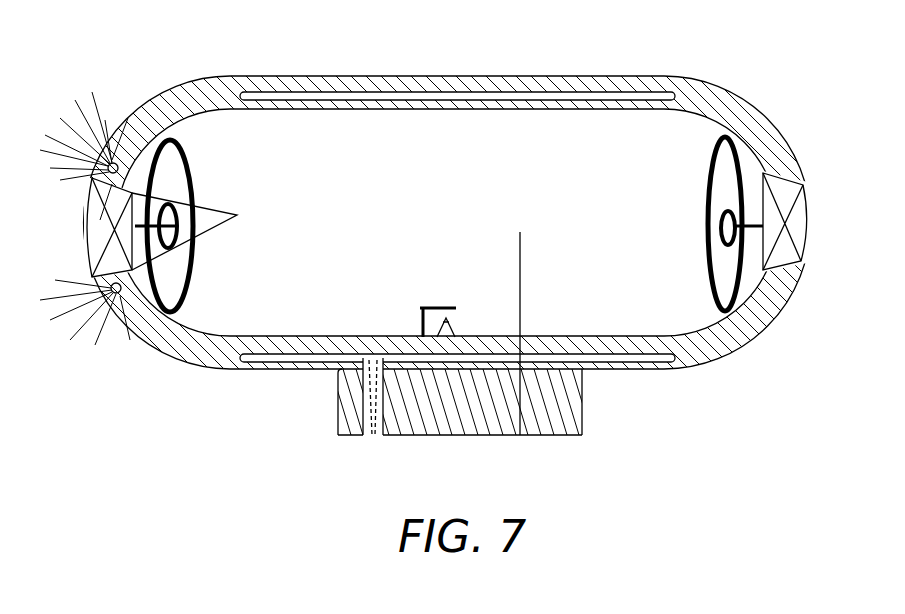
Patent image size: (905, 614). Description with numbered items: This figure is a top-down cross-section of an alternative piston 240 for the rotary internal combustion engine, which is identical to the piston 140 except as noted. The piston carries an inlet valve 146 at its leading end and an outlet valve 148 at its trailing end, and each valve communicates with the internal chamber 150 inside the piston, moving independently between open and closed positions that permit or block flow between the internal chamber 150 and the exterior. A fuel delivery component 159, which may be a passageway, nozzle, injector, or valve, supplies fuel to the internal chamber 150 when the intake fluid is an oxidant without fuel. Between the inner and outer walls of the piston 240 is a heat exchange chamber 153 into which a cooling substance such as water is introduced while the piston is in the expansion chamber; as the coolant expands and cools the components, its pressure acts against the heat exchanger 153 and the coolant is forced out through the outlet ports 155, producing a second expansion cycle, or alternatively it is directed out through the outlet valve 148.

The piston 240 is at (452, 231).
The piston 140 is at (752, 118).
The inlet valve 146 is at (808, 241).
The outlet valve 148 is at (84, 233).
The internal chamber 150 is at (414, 220).
The heat exchange chamber 153 is at (428, 95).
The outlet ports 155 is at (204, 226).
The fuel delivery component 159 is at (522, 237).